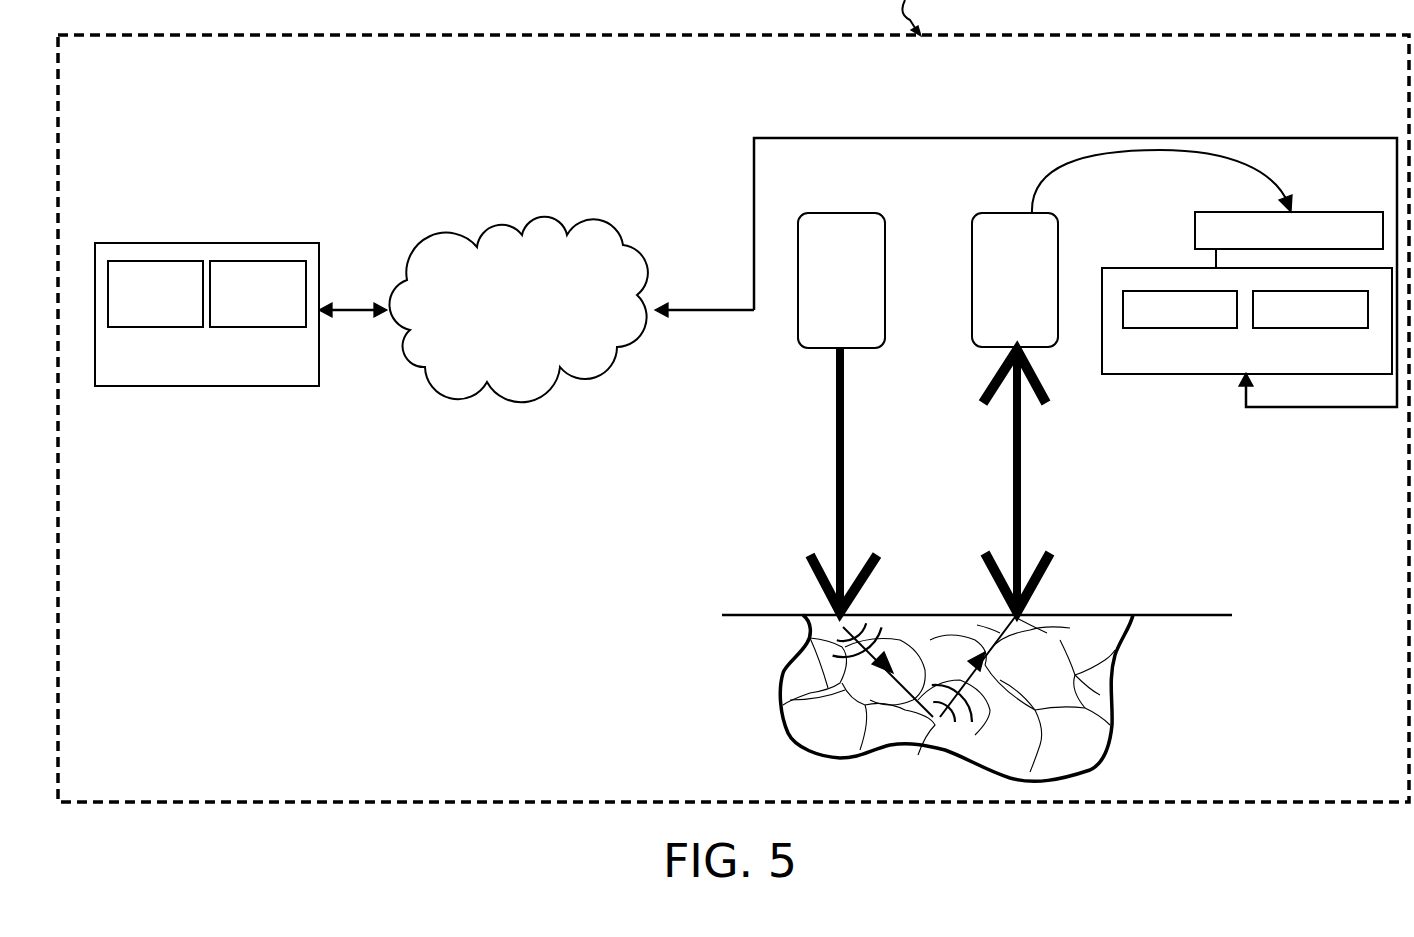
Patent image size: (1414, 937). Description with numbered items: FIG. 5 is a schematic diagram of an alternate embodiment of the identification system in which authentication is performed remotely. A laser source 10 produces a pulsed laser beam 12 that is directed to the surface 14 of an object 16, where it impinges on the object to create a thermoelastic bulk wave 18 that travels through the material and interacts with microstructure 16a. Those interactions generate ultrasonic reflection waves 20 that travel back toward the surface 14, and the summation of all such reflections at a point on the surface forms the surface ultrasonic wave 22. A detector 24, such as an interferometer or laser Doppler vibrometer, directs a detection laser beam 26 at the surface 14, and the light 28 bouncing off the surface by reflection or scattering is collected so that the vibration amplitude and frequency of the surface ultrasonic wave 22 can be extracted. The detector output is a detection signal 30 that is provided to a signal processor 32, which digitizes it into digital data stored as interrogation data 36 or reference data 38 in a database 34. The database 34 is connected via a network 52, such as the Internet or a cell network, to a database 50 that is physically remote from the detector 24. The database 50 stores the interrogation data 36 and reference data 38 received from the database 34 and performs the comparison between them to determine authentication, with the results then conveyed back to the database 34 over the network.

The laser source 10 is at (827, 298).
The pulsed laser beam 12 is at (838, 520).
The surface 14 is at (773, 613).
The object 16 is at (721, 736).
The microstructure 16a is at (827, 687).
The thermoelastic bulk wave 18 is at (882, 613).
The ultrasonic reflection wave 20 is at (957, 688).
The surface ultrasonic wave 22 is at (1043, 613).
The detector 24 is at (1000, 297).
The detection laser beam 26 is at (1020, 557).
The light 28 is at (1025, 413).
The detection signal 30 is at (1033, 194).
The signal processor 32 is at (1275, 244).
The database 34 is at (1231, 364).
The interrogation data 36 is at (140, 308).
The reference data 38 is at (243, 308).
The database 50 is at (192, 366).
The network 52 is at (498, 357).